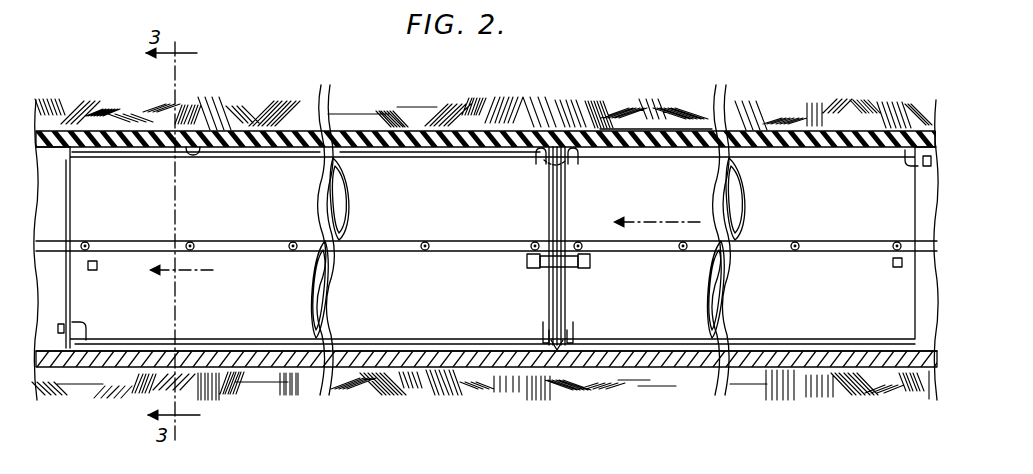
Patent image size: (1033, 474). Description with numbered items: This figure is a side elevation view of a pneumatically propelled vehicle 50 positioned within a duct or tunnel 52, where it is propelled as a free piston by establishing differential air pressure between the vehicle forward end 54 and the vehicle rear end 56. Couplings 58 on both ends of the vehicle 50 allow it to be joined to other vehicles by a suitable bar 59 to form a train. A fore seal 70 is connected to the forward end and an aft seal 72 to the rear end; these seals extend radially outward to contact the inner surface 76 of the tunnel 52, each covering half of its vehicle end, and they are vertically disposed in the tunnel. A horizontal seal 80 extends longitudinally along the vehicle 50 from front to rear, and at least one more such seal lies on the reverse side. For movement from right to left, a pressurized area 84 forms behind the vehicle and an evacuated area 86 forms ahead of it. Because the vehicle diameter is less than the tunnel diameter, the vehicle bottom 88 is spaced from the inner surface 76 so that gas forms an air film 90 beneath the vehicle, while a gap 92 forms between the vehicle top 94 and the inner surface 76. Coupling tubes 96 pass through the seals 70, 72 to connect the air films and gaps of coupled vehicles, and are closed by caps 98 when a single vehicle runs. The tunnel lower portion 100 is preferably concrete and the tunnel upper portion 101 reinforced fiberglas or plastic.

The vehicle 50 is at (710, 130).
The tunnel 52 is at (262, 128).
The vehicle forward end 54 is at (82, 156).
The vehicle rear end 56 is at (567, 200).
The couplings 58 is at (531, 268).
The bar 59 is at (557, 270).
The fore seal 70 is at (70, 282).
The aft seal 72 is at (548, 145).
The tunnel inner surface 76 is at (190, 137).
The horizontal seal 80 is at (362, 246).
The pressurized area 84 is at (926, 320).
The evacuated area 86 is at (50, 338).
The vehicle bottom 88 is at (258, 342).
The air film 90 is at (462, 347).
The gap 92 is at (447, 150).
The vehicle top 94 is at (367, 118).
The coupling tubes 96 is at (540, 165).
The caps 98 is at (74, 322).
The tunnel lower portion 100 is at (645, 357).
The tunnel upper portion 101 is at (656, 130).